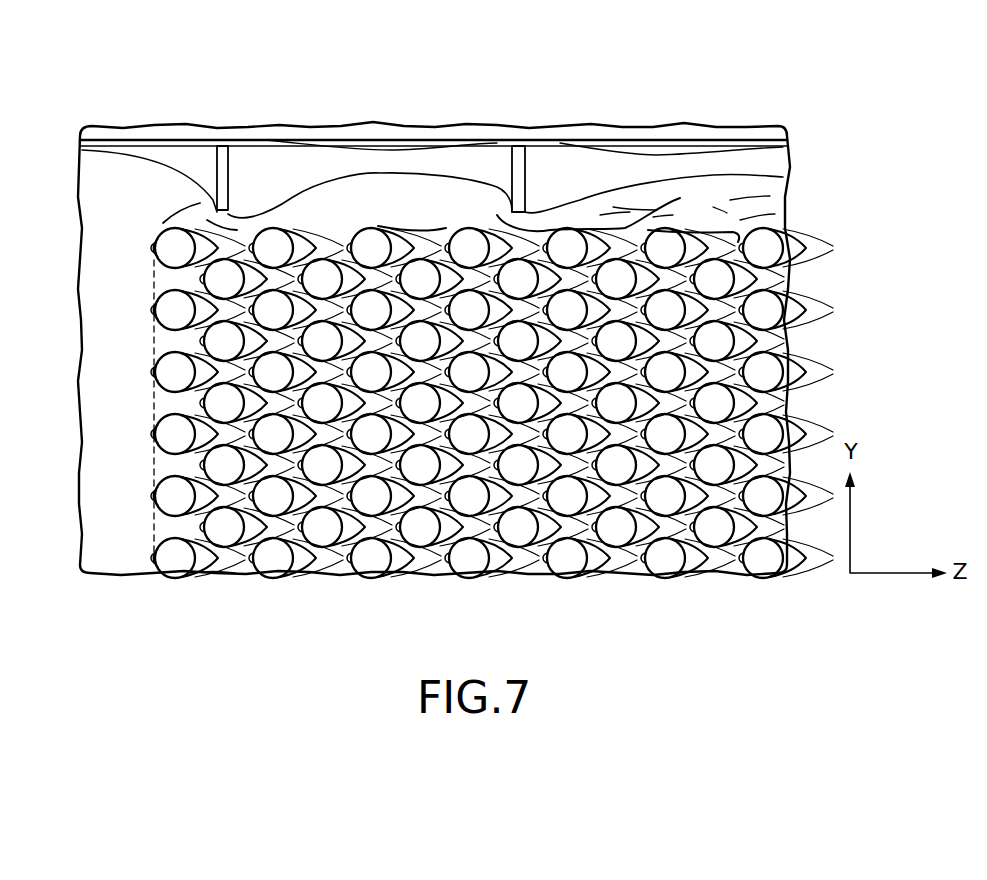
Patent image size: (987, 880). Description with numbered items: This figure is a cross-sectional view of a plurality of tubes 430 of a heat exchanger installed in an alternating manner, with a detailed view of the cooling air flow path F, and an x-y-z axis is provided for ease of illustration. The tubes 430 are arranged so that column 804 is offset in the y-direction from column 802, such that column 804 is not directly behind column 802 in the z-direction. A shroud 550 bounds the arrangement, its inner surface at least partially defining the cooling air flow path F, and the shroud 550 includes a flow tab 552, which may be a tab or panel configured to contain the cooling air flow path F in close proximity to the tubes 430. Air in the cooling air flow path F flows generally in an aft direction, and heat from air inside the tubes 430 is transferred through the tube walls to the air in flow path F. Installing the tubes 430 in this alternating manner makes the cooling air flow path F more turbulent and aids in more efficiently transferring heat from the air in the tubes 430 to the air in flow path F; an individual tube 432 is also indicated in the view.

The shroud 550 is at (153, 133).
The flow tab 552 is at (223, 155).
The cooling air flow path F is at (367, 207).
The tube 432 is at (148, 248).
The plurality of tubes 430 is at (690, 588).
The column 802 is at (175, 578).
The column 804 is at (225, 580).